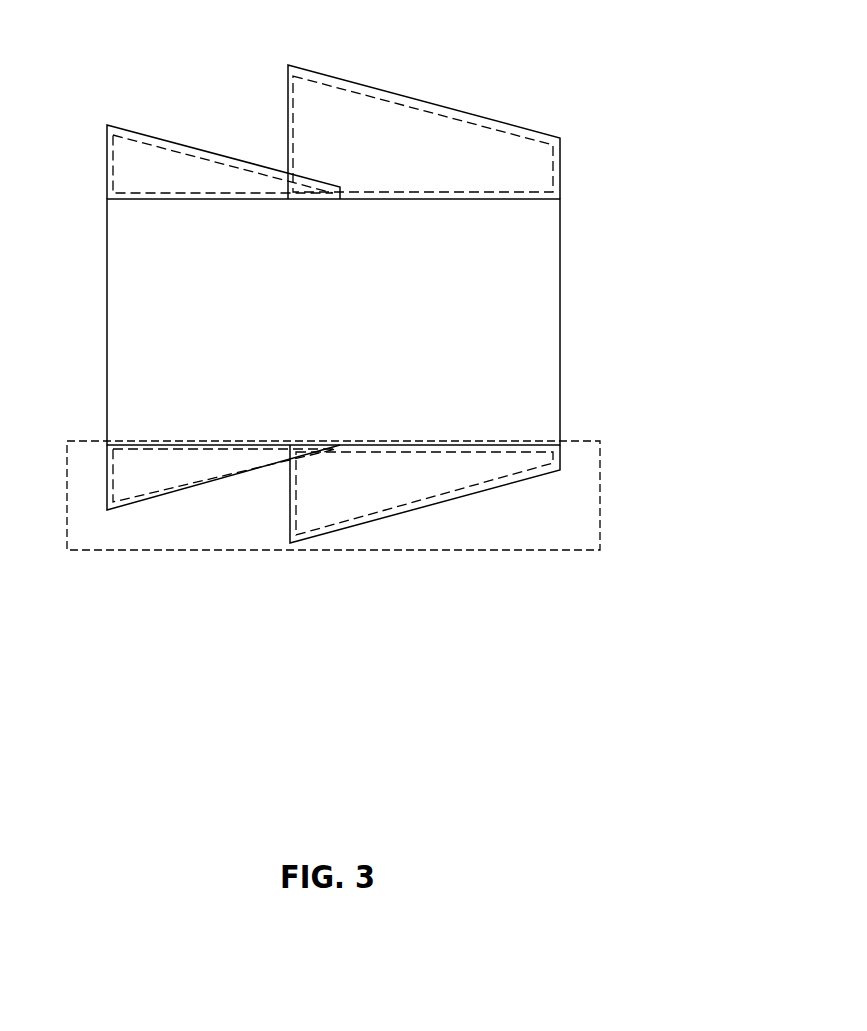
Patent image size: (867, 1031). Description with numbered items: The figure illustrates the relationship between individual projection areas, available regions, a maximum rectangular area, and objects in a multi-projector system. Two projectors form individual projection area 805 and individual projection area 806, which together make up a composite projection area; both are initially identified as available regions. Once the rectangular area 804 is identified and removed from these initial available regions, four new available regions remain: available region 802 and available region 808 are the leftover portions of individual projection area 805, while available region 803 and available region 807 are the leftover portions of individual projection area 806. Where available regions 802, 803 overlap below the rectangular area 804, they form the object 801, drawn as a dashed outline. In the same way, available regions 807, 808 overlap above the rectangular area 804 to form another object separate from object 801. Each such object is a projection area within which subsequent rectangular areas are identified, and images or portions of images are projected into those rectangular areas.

The object 801 is at (602, 468).
The available region 802 is at (337, 503).
The available region 803 is at (147, 477).
The rectangular area 804 is at (544, 290).
The individual projection area 805 is at (545, 135).
The individual projection area 806 is at (107, 156).
The available region 807 is at (162, 175).
The available region 808 is at (383, 142).